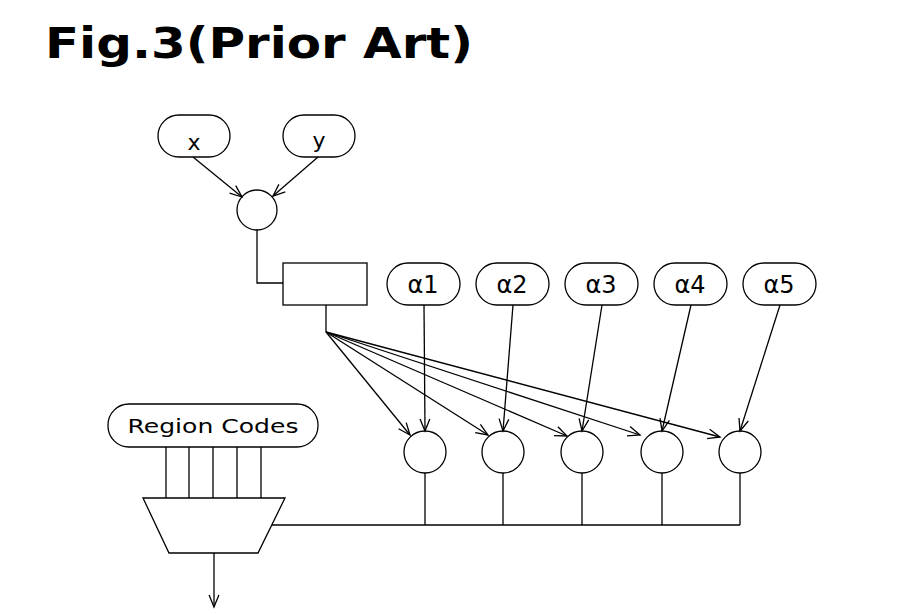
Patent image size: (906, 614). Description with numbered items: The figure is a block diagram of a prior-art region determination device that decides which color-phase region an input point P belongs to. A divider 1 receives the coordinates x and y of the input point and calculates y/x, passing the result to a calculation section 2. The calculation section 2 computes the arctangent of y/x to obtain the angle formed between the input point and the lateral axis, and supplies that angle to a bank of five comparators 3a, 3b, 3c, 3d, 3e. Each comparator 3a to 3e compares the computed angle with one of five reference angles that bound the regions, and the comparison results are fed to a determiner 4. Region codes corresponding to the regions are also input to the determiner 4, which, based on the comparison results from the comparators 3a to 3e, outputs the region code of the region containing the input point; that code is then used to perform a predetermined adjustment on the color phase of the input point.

The divider 1 is at (237, 211).
The calculation section 2 is at (327, 263).
The comparator 3a is at (410, 467).
The comparator 3b is at (488, 467).
The comparator 3c is at (567, 467).
The comparator 3d is at (647, 467).
The comparator 3e is at (725, 467).
The determiner 4 is at (152, 525).